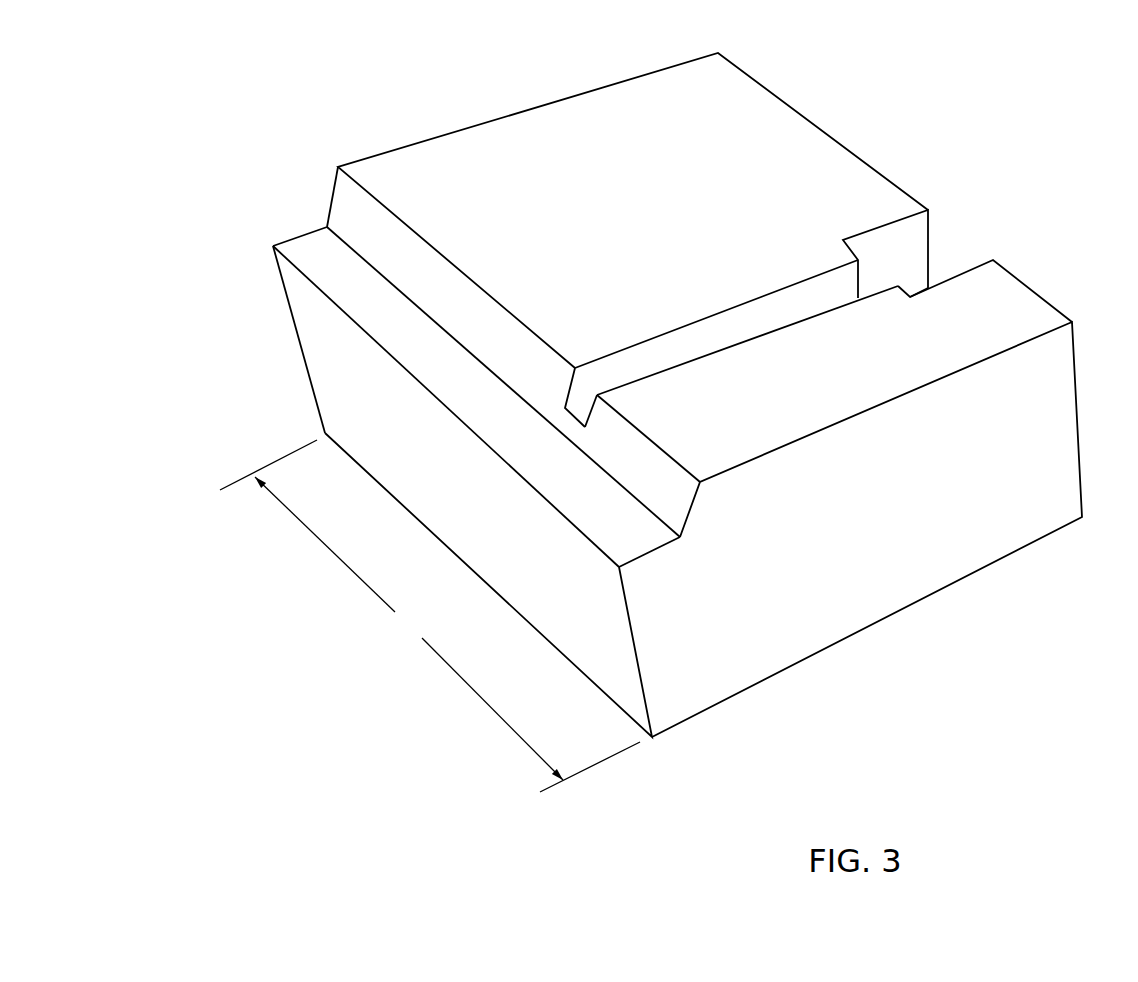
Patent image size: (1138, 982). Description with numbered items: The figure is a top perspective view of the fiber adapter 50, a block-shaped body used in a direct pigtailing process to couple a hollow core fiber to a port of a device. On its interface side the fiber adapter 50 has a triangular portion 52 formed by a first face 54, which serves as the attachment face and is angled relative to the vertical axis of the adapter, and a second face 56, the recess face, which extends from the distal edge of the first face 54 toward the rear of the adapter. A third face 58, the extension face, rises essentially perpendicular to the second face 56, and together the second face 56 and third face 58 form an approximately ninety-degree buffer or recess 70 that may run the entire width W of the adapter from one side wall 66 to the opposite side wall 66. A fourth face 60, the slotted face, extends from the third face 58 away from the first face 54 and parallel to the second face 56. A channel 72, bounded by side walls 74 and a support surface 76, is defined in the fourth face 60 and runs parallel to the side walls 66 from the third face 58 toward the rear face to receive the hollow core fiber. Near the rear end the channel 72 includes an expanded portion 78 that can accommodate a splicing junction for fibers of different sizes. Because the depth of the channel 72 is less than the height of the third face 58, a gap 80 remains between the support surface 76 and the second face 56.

The fiber adapter 50 is at (248, 88).
The triangular portion 52 is at (295, 328).
The first face 54 is at (337, 397).
The second face 56 is at (298, 253).
The third face 58 is at (348, 205).
The fourth face 60 is at (417, 155).
The side walls 66 is at (912, 585).
The recess 70 is at (313, 218).
The channel 72 is at (708, 315).
The side walls 74 is at (628, 368).
The support surface 76 is at (583, 414).
The expanded portion 78 is at (910, 220).
The gap 80 is at (565, 422).